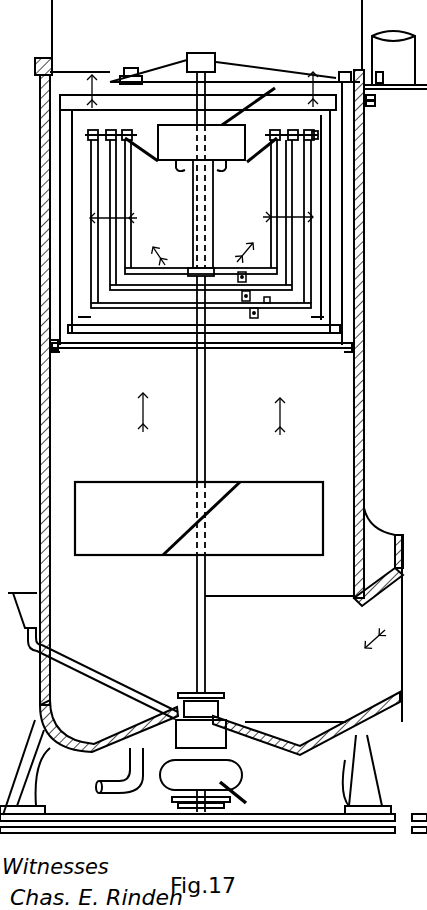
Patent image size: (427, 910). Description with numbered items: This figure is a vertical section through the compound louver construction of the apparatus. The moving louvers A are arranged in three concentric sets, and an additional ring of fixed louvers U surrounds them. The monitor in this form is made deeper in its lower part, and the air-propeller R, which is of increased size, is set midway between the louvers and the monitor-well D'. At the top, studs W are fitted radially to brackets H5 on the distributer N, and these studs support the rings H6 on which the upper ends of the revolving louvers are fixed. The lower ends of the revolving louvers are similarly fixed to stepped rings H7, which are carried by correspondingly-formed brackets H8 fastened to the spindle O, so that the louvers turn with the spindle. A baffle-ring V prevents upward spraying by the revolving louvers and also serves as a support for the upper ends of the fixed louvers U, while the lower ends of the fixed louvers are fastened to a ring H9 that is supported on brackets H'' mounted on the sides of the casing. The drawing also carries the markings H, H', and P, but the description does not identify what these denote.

The baffle-ring V is at (68, 97).
The fixed louvers U is at (65, 213).
The distributer N is at (201, 142).
The spindle O is at (205, 372).
The ring H9 is at (110, 337).
The brackets H'' is at (65, 363).
The moving louvers A is at (110, 188).
The studs W is at (299, 128).
The plates H is at (201, 222).
The hook and brace H' is at (155, 231).
The hook P is at (229, 164).
The brackets H5 is at (253, 170).
The rings H6 is at (314, 143).
The brackets H8 is at (243, 298).
The stepped rings H7 is at (266, 300).
The air-propeller R is at (199, 518).
The monitor-well D' is at (306, 723).